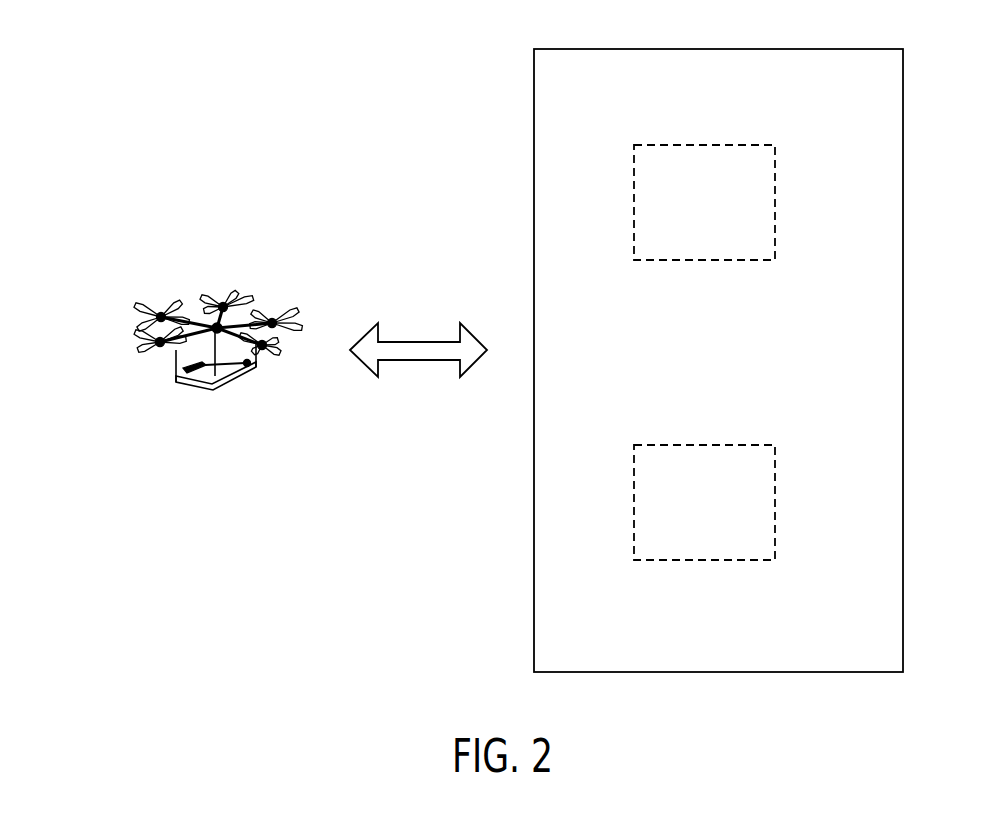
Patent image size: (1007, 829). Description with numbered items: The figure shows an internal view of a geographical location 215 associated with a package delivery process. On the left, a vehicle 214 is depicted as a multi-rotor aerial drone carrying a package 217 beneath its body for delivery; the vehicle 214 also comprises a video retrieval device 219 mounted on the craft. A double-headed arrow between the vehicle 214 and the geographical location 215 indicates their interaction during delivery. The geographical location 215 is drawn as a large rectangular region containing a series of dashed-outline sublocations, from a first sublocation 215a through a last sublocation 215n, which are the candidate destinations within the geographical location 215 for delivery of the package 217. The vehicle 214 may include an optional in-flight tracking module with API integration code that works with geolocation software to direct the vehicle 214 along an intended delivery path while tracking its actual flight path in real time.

The vehicle 214 is at (181, 287).
The package 217 is at (193, 372).
The video retrieval device 219 is at (238, 347).
The geographical location 215 is at (903, 110).
The sublocation 215a is at (777, 197).
The sublocation 215n is at (777, 497).